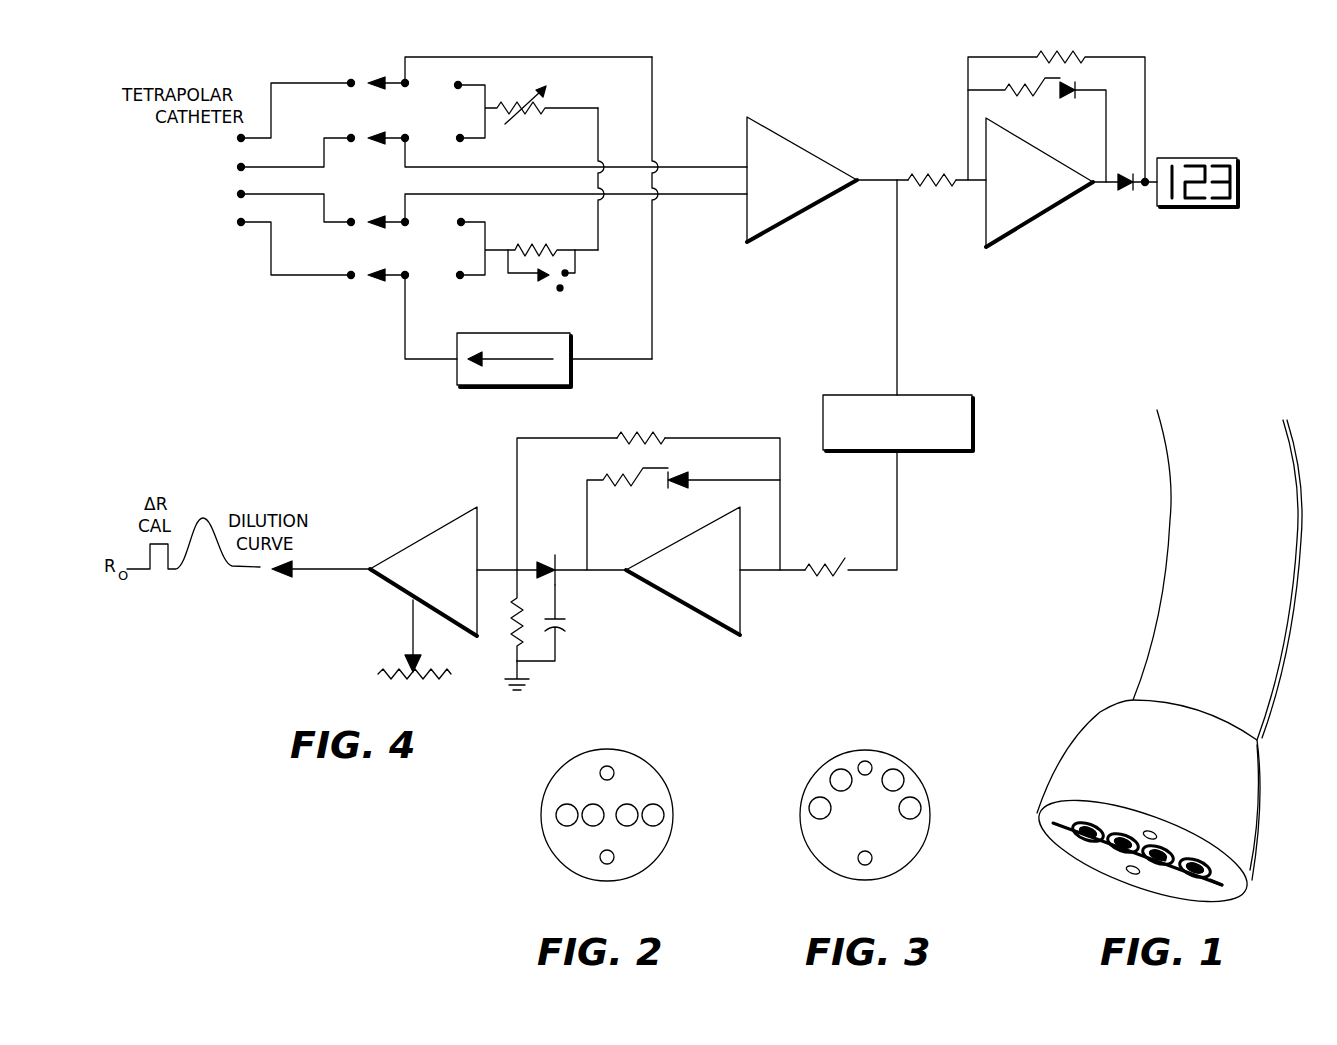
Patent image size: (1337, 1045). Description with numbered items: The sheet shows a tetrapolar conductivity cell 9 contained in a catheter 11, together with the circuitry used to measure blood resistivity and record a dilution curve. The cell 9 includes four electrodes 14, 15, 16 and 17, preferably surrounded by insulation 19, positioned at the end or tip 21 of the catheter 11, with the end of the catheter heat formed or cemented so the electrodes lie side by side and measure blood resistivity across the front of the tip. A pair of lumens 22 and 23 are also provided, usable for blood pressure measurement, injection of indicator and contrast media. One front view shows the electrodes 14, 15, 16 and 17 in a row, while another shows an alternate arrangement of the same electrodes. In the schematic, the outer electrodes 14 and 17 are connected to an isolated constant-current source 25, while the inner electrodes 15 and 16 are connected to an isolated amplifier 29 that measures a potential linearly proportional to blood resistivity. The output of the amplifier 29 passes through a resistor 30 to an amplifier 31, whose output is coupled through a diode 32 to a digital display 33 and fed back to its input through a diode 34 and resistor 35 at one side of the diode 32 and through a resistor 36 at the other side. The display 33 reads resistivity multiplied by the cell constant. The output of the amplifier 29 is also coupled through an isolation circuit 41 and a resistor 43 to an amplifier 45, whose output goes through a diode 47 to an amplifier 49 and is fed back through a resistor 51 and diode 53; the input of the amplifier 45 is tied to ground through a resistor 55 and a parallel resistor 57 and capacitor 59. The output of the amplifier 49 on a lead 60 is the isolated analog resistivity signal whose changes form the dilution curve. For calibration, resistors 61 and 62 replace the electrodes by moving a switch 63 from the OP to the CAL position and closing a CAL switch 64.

In FIG. 1, the sensing unit (tetrapolar conductivity cell) 9 is at (1026, 878).
In FIG. 1, the catheter 11 is at (1285, 576).
In FIG. 4, the electrode 14 is at (281, 117).
In FIG. 2, the electrode 14 is at (556, 814).
In FIG. 3, the electrode 14 is at (808, 808).
In FIG. 1, the electrode 14 is at (1090, 822).
In FIG. 4, the electrode 15 is at (281, 159).
In FIG. 2, the electrode 15 is at (592, 800).
In FIG. 3, the electrode 15 is at (830, 780).
In FIG. 1, the electrode 15 is at (1128, 836).
In FIG. 4, the electrode 16 is at (281, 202).
In FIG. 2, the electrode 16 is at (630, 800).
In FIG. 3, the electrode 16 is at (903, 778).
In FIG. 1, the electrode 16 is at (1168, 845).
In FIG. 4, the electrode 17 is at (281, 243).
In FIG. 2, the electrode 17 is at (660, 814).
In FIG. 3, the electrode 17 is at (922, 808).
In FIG. 1, the electrode 17 is at (1210, 862).
In FIG. 1, the insulation 19 is at (1150, 877).
In FIG. 1, the end (tip) of catheter 21 is at (1218, 890).
In FIG. 2, the lumen 22 is at (607, 764).
In FIG. 3, the lumen 22 is at (866, 760).
In FIG. 1, the lumen 22 is at (1152, 828).
In FIG. 2, the lumen 23 is at (609, 864).
In FIG. 3, the lumen 23 is at (860, 866).
In FIG. 1, the lumen 23 is at (1127, 872).
In FIG. 4, the isolated constant-current source 25 is at (470, 335).
In FIG. 4, the isolated amplifier 29 is at (796, 147).
In FIG. 4, the resistor 30 is at (925, 178).
In FIG. 4, the amplifier 31 is at (1040, 208).
In FIG. 4, the diode 32 is at (1120, 188).
In FIG. 4, the digital display (digital panel meter) 33 is at (1197, 158).
In FIG. 4, the diode 34 is at (1078, 92).
In FIG. 4, the resistor 35 is at (1008, 84).
In FIG. 4, the resistor 36 is at (1080, 44).
In FIG. 4, the isolation circuit 41 is at (946, 395).
In FIG. 4, the resistor 43 is at (838, 576).
In FIG. 4, the amplifier 45 is at (690, 612).
In FIG. 4, the diode 47 is at (545, 556).
In FIG. 4, the amplifier 49 is at (410, 546).
In FIG. 4, the resistor 51 is at (628, 488).
In FIG. 4, the diode 53 is at (682, 490).
In FIG. 4, the resistor 55 is at (662, 436).
In FIG. 4, the resistor 57 is at (510, 628).
In FIG. 4, the capacitor 59 is at (560, 622).
In FIG. 4, the lead 60 is at (334, 574).
In FIG. 4, the calibration resistor 61 is at (508, 104).
In FIG. 4, the calibration resistor 62 is at (515, 248).
In FIG. 4, the switch 63 is at (346, 82).
In FIG. 4, the CAL switch 64 is at (533, 280).